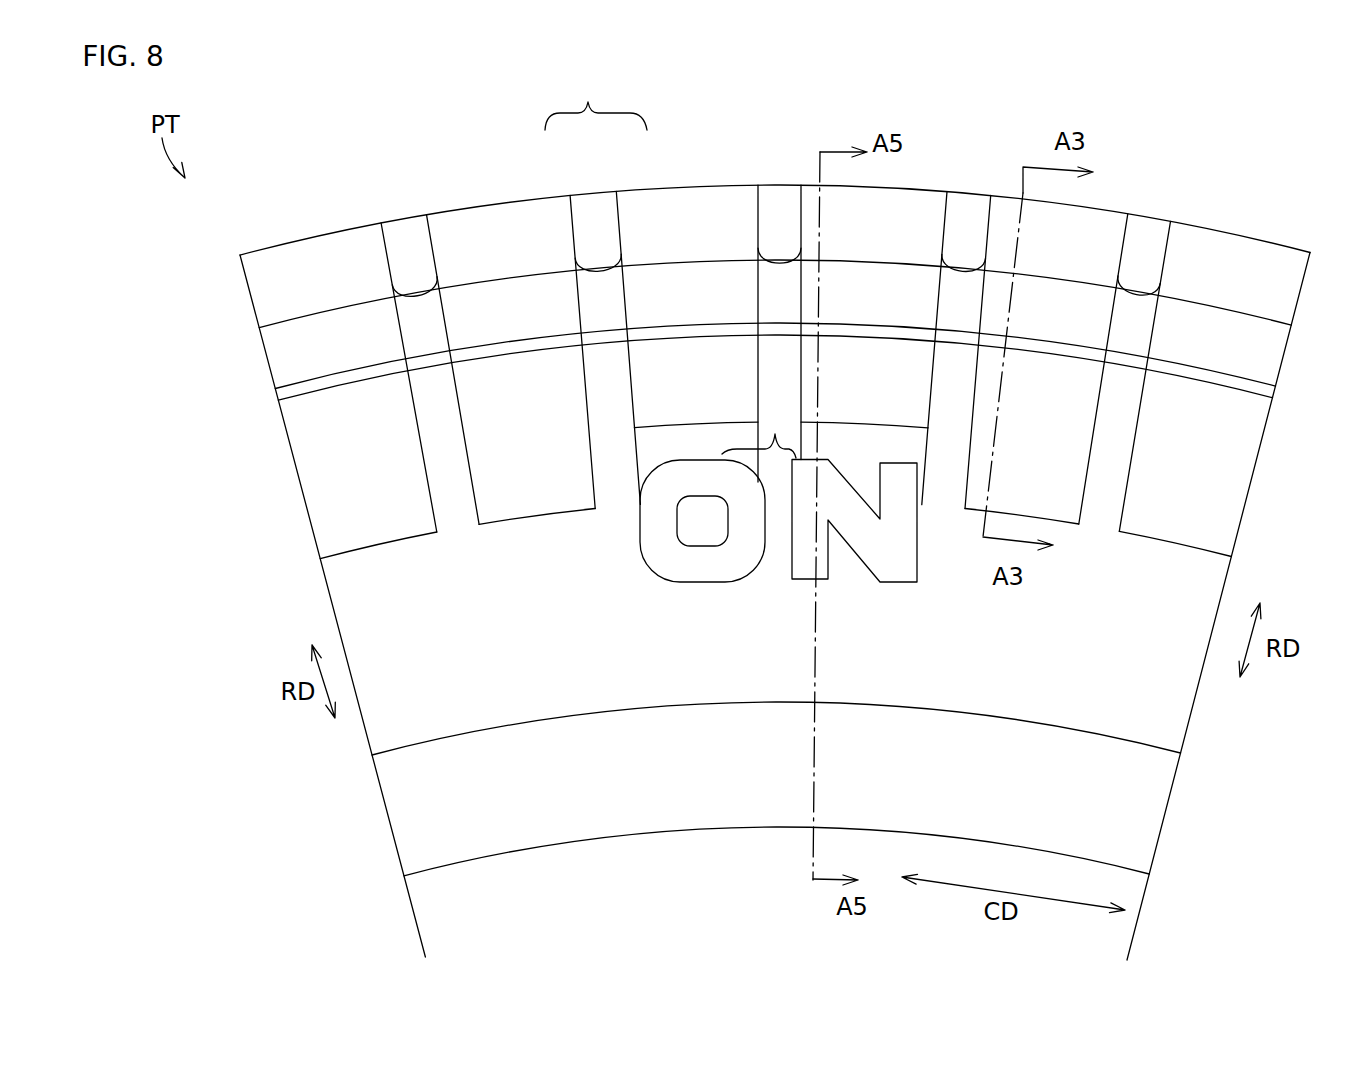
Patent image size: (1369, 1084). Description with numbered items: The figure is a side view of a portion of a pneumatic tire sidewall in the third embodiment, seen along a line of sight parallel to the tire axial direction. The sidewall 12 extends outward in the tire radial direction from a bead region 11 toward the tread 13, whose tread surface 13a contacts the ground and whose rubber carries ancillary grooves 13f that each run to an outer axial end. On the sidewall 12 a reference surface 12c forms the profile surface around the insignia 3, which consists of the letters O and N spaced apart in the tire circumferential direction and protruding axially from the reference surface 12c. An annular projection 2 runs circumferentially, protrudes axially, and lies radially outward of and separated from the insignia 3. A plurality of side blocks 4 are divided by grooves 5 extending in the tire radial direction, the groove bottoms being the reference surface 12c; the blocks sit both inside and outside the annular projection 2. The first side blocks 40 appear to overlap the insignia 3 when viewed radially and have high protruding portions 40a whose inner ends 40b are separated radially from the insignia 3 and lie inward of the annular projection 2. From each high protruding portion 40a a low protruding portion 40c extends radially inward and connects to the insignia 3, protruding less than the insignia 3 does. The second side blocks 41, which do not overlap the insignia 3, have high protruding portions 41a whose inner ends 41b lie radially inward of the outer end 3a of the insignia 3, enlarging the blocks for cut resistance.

The annular projection 2 is at (273, 390).
The insignia 3 is at (695, 577).
The outer end of insignia 3a is at (759, 433).
The side block 4 is at (596, 101).
The groove 5 is at (417, 337).
The bead region 11 is at (636, 863).
The sidewall 12 is at (301, 583).
The reference surface 12c is at (527, 640).
The tread 13 is at (439, 176).
The tread surface 13a is at (485, 203).
The ancillary groove 13f is at (397, 238).
The first side block 40 is at (648, 282).
The high protruding portion of first side block 40a is at (673, 305).
The inner end of high protruding portion 40b is at (633, 428).
The low protruding portion 40c is at (680, 452).
The second side block 41 is at (535, 290).
The high protruding portion of second side block 41a is at (296, 358).
The inner end of high protruding portion 41b is at (380, 547).